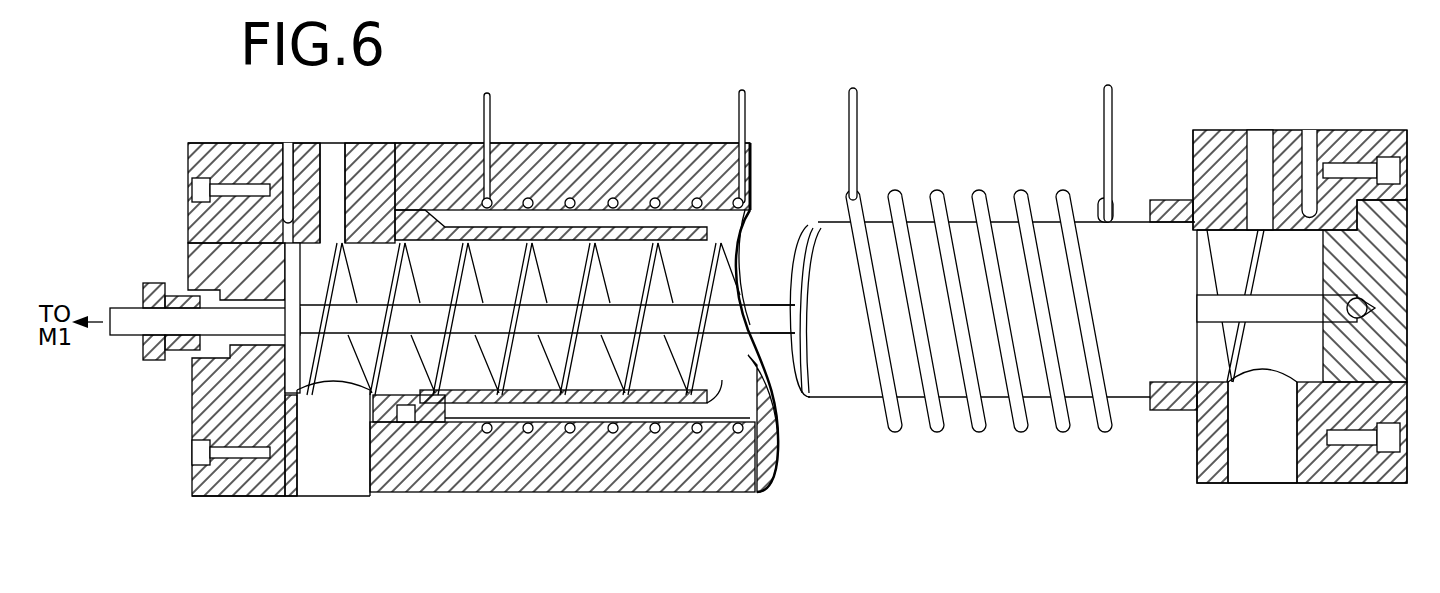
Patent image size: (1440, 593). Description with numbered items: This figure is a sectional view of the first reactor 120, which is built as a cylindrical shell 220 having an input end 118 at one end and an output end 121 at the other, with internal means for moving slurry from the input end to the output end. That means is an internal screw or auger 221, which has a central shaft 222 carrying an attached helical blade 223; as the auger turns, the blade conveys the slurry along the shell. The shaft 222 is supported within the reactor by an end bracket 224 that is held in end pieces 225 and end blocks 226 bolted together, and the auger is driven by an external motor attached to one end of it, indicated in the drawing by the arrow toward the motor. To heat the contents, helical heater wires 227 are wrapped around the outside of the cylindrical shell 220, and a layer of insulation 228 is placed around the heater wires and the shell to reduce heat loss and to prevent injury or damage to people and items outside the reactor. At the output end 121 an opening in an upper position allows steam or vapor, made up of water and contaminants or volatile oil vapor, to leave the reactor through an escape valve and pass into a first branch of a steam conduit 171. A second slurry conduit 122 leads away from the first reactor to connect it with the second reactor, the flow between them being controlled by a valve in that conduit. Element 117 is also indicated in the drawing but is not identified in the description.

The outlet opening 117 is at (1255, 463).
The input end 118 is at (1310, 362).
The first reactor 120 is at (1018, 78).
The output end 121 is at (293, 365).
The second slurry conduit 122 is at (330, 497).
The steam conduit 171 is at (330, 157).
The cylindrical shell 220 is at (643, 397).
The screw or auger 221 is at (533, 352).
The central shaft 222 is at (467, 323).
The helical blade 223 is at (560, 367).
The end bracket 224 is at (143, 357).
The end pieces 225 is at (200, 237).
The end blocks 226 is at (228, 155).
The helical heater wires 227 is at (528, 203).
The layer of insulation 228 is at (707, 470).